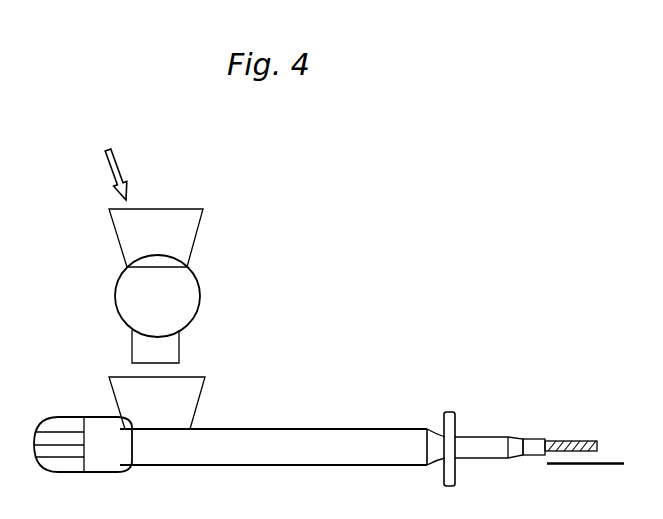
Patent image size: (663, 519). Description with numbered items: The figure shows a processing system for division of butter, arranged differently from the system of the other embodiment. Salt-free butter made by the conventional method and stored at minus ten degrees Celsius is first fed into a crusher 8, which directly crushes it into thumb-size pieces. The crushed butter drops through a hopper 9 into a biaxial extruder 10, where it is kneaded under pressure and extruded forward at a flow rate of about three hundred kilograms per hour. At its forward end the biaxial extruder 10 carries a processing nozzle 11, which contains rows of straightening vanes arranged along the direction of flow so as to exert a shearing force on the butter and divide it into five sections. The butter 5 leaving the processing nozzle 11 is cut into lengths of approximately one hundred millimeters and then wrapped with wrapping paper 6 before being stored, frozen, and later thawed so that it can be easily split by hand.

The butter 5 is at (578, 447).
The wrapping paper 6 is at (623, 462).
The crusher 8 is at (190, 287).
The funnel 9 is at (196, 390).
The biaxial extruder 10 is at (348, 440).
The processing nozzle 11 is at (487, 440).